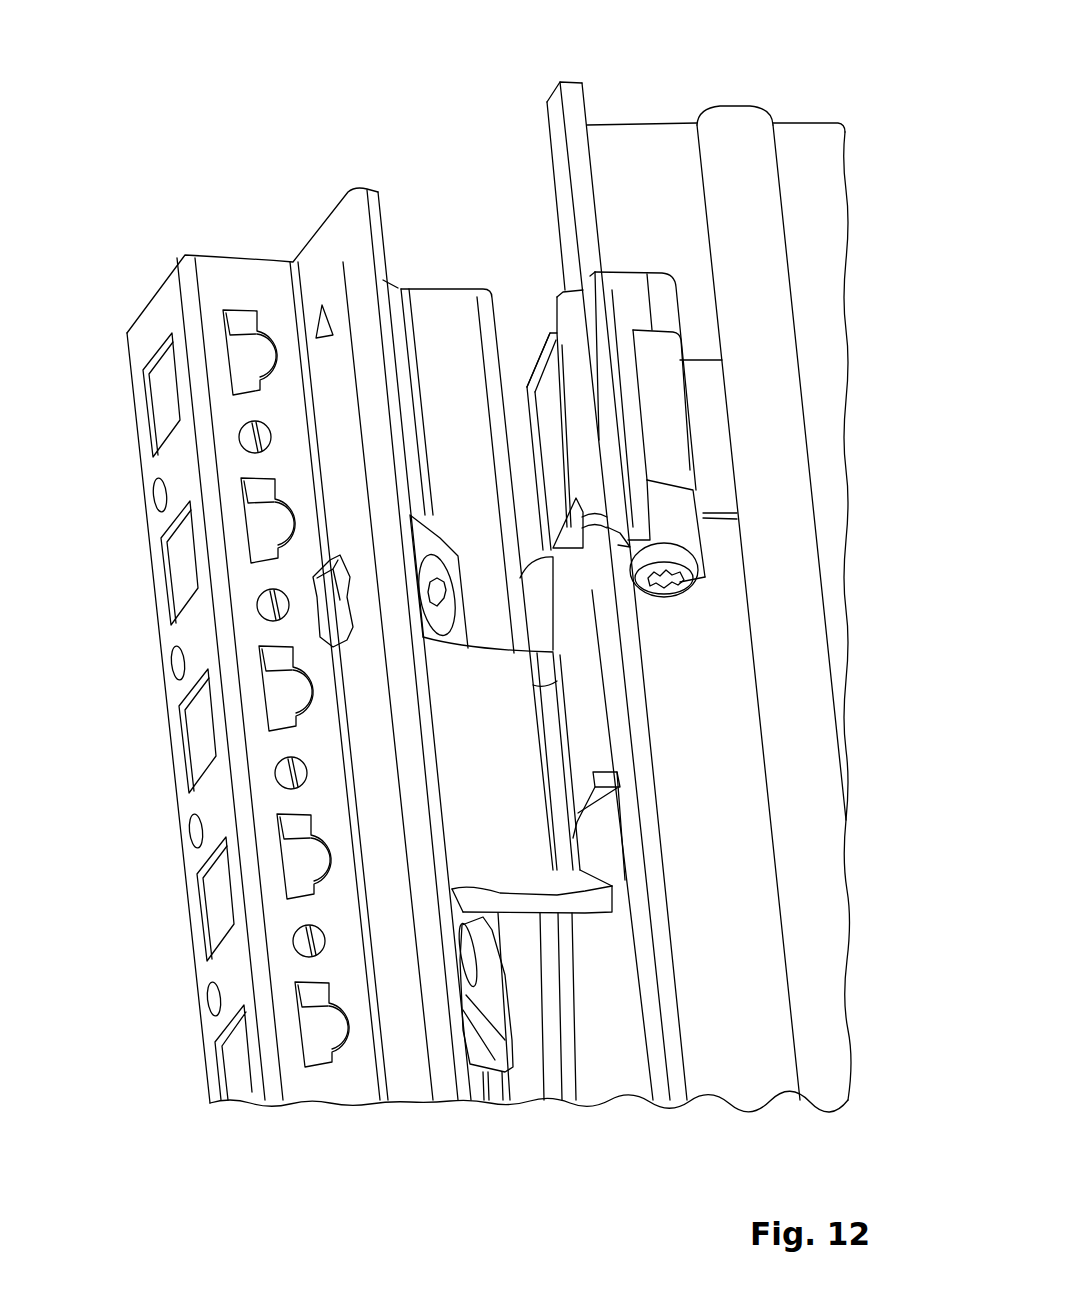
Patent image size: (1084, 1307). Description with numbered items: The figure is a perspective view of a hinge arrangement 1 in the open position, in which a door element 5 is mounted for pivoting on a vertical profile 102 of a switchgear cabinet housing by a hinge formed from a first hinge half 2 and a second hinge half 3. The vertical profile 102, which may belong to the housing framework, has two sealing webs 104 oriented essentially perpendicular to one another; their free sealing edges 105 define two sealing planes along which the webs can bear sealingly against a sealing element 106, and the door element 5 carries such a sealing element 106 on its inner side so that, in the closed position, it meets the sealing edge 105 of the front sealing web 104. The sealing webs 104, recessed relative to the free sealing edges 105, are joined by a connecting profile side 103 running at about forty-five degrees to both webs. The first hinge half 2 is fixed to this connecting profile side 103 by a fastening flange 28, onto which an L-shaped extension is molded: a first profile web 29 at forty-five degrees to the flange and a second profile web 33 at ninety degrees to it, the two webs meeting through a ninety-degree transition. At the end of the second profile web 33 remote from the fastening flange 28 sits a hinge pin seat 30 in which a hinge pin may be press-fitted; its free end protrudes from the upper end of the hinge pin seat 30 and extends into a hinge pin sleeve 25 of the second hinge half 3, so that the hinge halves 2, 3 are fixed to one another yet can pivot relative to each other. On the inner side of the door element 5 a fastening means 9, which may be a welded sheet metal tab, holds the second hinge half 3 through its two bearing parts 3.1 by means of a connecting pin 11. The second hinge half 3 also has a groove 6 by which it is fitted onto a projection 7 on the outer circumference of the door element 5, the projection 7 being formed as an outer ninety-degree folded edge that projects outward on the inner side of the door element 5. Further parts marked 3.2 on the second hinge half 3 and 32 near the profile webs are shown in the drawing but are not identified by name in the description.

The hinge arrangement 1 is at (121, 140).
The vertical profile 102 is at (232, 198).
The connecting profile side 103 is at (393, 292).
The sealing web 104 is at (323, 247).
The free sealing edge 105 is at (372, 192).
The projection 7 is at (562, 94).
The door element 5 is at (820, 174).
The sealing element 106 is at (739, 140).
The second hinge half 3 is at (636, 240).
The bearing part 3.1 is at (663, 296).
The hook 3.2 is at (528, 378).
The groove 6 is at (602, 266).
The fastening means 9 is at (658, 388).
The connecting pin 11 is at (665, 582).
The hinge pin sleeve 25 is at (520, 394).
The hinge pin seat 30 is at (568, 607).
The first profile web 29 is at (520, 902).
The connector 32 is at (583, 912).
The second profile web 33 is at (617, 893).
The fastening flange 28 is at (504, 1076).
The first hinge half 2 is at (522, 1006).